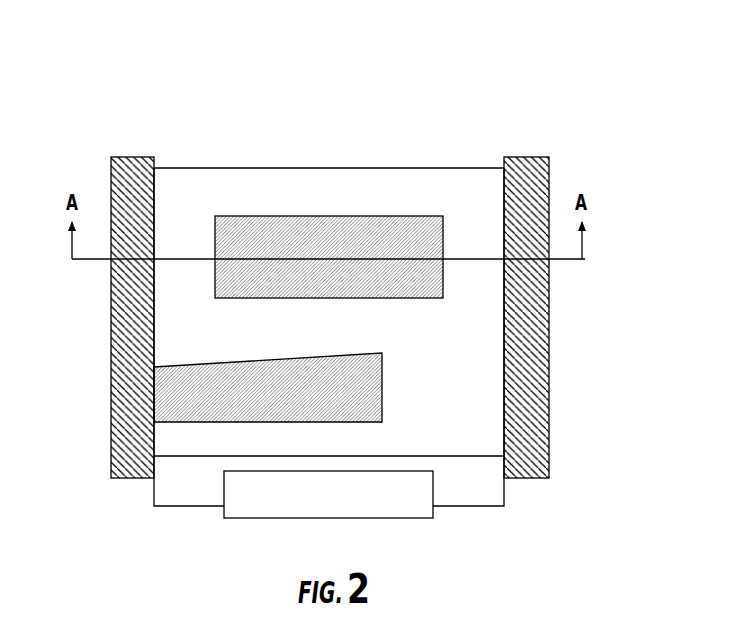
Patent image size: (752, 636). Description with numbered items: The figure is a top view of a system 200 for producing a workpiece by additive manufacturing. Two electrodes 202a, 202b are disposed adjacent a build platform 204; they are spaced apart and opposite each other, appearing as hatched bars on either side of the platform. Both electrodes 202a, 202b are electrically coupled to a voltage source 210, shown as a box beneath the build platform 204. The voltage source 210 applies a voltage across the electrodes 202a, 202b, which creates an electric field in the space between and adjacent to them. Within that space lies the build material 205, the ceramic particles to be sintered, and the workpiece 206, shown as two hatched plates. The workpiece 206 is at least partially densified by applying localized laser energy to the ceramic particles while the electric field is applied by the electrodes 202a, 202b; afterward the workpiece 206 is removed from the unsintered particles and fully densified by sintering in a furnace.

The system 200 is at (530, 82).
The first electrode 202a is at (131, 487).
The second electrode 202b is at (531, 487).
The build platform 204 is at (328, 164).
The build material 205 is at (468, 359).
The workpiece 206 is at (195, 361).
The voltage source 210 is at (344, 504).